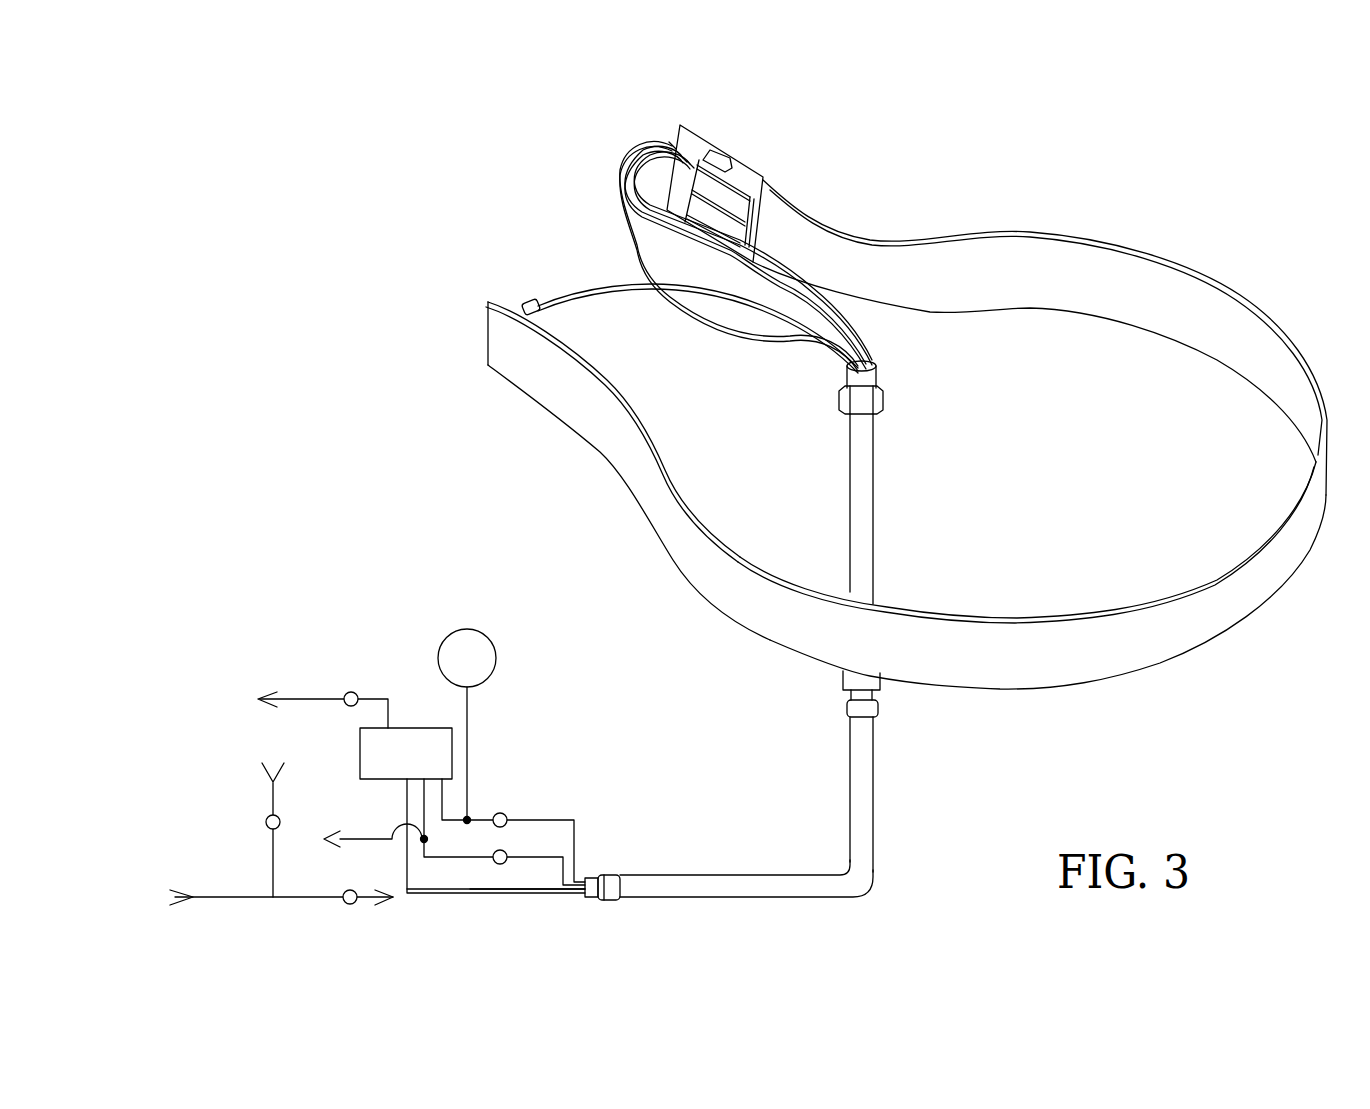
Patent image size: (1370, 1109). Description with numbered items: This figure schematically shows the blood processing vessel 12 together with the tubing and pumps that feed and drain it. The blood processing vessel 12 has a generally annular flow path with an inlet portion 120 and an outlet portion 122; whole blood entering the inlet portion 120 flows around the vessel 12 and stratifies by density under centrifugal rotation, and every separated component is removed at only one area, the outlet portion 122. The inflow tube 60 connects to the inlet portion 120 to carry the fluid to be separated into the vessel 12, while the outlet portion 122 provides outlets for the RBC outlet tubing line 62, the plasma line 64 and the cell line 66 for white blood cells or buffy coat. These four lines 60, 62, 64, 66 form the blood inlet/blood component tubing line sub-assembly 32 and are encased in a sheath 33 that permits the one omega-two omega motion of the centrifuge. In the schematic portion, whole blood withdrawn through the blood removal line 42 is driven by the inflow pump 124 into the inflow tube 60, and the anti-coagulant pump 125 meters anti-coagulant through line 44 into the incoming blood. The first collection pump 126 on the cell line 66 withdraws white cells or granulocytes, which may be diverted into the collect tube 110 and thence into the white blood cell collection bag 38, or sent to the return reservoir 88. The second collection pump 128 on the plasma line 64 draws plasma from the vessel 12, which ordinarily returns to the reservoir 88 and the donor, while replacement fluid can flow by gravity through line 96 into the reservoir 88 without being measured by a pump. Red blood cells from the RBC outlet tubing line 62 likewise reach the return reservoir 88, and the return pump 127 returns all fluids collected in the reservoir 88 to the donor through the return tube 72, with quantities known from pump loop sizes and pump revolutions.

The blood processing vessel 12 is at (1155, 712).
The blood inlet/blood component tubing line sub-assembly 32 is at (892, 794).
The sheath 33 is at (872, 855).
The white blood cell collection bag 38 is at (495, 653).
The blood removal line 42 is at (243, 903).
The anti-coagulant line 44 is at (272, 865).
The inflow tube 60 is at (558, 295).
The RBC outlet tubing line 62 is at (862, 340).
The plasma line 64 is at (820, 343).
The cell line 66 is at (728, 335).
The return tube 72 is at (303, 697).
The return reservoir 88 is at (358, 757).
The replacement fluid line 96 is at (383, 842).
The collect tube 110 is at (472, 737).
The inlet portion 120 is at (580, 433).
The outlet portion 122 is at (762, 187).
The inflow pump 124 is at (345, 903).
The anti-coagulant pump 125 is at (265, 828).
The first collection pump 126 is at (492, 828).
The return pump 127 is at (347, 705).
The second collection pump 128 is at (492, 863).